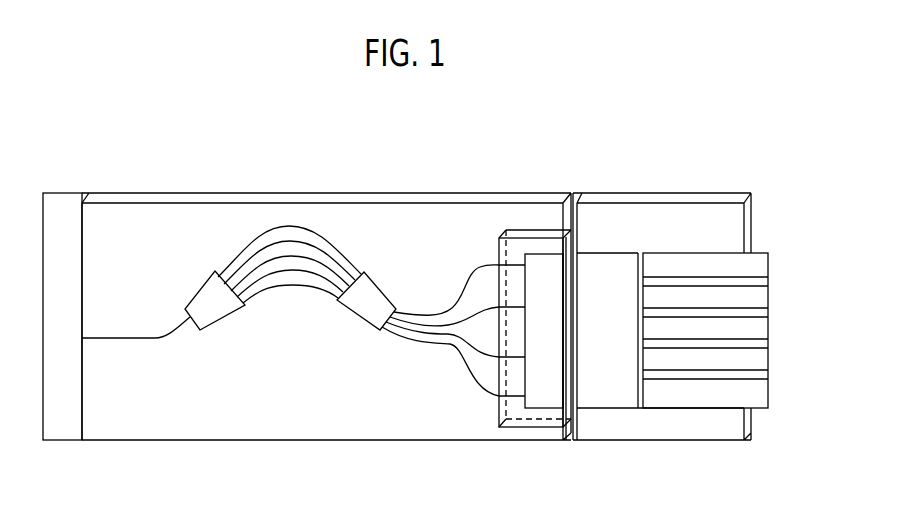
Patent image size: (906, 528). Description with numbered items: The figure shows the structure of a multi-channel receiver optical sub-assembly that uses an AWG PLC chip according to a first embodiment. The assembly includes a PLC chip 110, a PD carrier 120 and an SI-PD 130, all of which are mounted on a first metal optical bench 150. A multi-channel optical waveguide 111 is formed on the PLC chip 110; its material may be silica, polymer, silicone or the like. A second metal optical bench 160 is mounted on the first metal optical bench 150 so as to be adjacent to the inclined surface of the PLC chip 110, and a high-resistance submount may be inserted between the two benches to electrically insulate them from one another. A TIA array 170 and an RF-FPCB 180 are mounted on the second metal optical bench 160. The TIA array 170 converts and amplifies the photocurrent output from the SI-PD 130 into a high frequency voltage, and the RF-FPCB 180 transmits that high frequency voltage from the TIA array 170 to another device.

The PLC chip 110 is at (277, 422).
The multi-channel optical waveguide 111 is at (291, 226).
The PD carrier 120 is at (509, 423).
The SI-PD 130 is at (550, 395).
The first metal optical bench 150 is at (62, 422).
The second metal optical bench 160 is at (708, 422).
The TIA array 170 is at (604, 422).
The RF-FPCB 180 is at (757, 327).